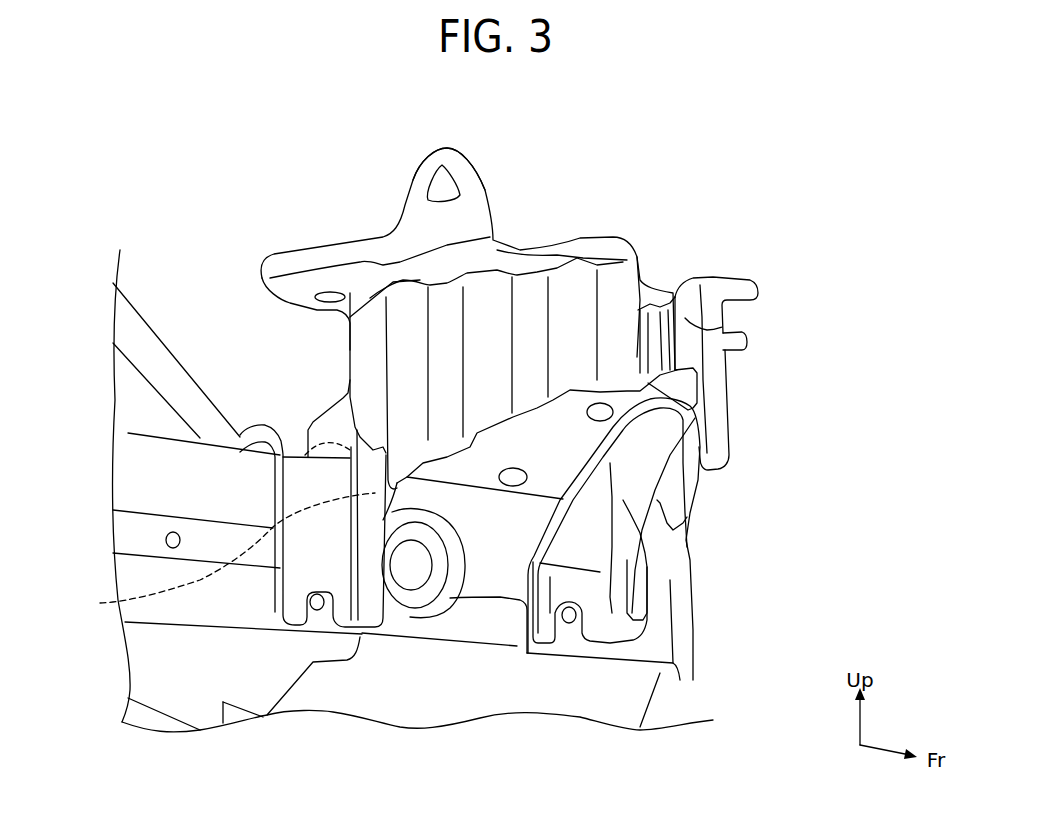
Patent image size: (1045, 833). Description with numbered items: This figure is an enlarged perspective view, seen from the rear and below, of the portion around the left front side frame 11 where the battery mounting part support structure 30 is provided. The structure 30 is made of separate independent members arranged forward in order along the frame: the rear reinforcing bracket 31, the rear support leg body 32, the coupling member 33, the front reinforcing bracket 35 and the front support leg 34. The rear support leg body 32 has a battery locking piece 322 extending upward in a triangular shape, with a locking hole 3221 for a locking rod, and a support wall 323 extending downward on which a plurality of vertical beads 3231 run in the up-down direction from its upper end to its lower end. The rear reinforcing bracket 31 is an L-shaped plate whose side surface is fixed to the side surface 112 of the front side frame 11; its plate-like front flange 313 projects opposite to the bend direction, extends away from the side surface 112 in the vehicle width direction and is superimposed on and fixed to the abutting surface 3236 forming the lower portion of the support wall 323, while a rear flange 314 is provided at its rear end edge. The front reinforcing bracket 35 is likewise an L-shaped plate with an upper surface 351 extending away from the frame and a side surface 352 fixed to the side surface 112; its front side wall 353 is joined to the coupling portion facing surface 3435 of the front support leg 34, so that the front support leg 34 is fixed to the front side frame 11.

The front side frame 11 is at (140, 453).
The side surface 112 is at (140, 490).
The battery mounting part support structure 30 is at (642, 160).
The rear reinforcing bracket 31 is at (294, 426).
The front flange 313 is at (385, 612).
The rear flange 314 is at (255, 415).
The rear support leg body 32 is at (333, 229).
The battery locking piece 322 is at (445, 152).
The locking hole 3221 is at (450, 185).
The support wall 323 is at (363, 348).
The vertical beads 3231 is at (497, 312).
The abutting surface 3236 is at (100, 604).
The coupling member 33 is at (491, 497).
The front support leg 34 is at (765, 270).
The coupling portion facing surface 3435 is at (725, 325).
The front reinforcing bracket 35 is at (600, 655).
The upper surface 351 is at (645, 473).
The side surface 352 is at (550, 613).
The front side wall 353 is at (633, 547).